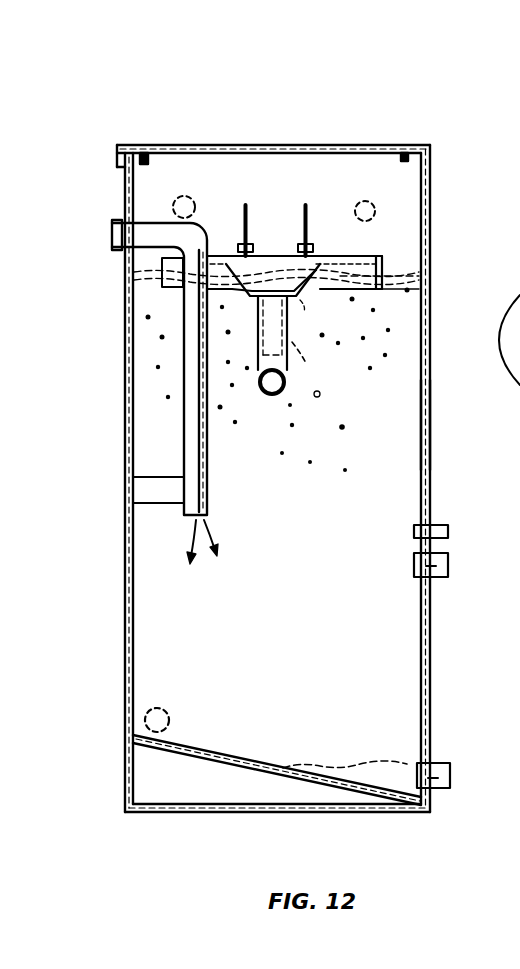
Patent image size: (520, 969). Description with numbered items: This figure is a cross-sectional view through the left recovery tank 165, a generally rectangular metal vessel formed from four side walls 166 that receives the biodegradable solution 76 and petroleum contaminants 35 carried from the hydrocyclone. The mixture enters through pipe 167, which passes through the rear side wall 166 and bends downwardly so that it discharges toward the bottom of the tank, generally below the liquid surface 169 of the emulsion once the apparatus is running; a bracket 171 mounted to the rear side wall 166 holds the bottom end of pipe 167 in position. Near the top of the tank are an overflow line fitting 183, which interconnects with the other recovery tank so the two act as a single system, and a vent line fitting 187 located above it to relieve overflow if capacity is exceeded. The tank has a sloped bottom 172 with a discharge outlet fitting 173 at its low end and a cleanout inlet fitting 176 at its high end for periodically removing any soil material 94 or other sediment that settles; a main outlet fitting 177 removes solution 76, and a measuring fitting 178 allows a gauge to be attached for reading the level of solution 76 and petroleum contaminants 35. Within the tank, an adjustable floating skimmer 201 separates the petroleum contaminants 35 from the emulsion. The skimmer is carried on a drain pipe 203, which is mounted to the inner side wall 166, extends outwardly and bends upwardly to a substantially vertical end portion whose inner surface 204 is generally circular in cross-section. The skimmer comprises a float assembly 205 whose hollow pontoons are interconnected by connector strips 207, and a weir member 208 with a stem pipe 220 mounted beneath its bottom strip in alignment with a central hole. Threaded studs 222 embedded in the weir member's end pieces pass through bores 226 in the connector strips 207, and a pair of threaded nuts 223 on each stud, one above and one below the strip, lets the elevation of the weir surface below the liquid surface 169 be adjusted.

The left recovery tank 165 is at (434, 190).
The side wall 166 is at (432, 424).
The biodegradable solution 76 is at (405, 462).
The sloped bottom 172 is at (220, 767).
The vent line fitting 187 is at (182, 195).
The overflow line fitting 183 is at (375, 207).
The cleanout inlet fitting 176 is at (143, 710).
The pipe 167 is at (186, 424).
The bracket 171 is at (154, 480).
The threaded stud 222 is at (250, 240).
The connector strip 207 is at (240, 249).
The bore 226 is at (310, 250).
The threaded nut 223 is at (250, 250).
The float assembly 205 is at (400, 277).
The liquid surface 169 is at (397, 273).
The floating skimmer 201 is at (385, 294).
The drain pipe 203 is at (257, 349).
The inner surface 204 is at (286, 393).
The weir member 208 is at (298, 306).
The stem pipe 220 is at (347, 407).
The petroleum contaminants 35 is at (153, 277).
The measuring fitting 178 is at (442, 527).
The main outlet fitting 177 is at (450, 567).
The discharge outlet fitting 173 is at (437, 790).
The soil material 94 is at (407, 762).